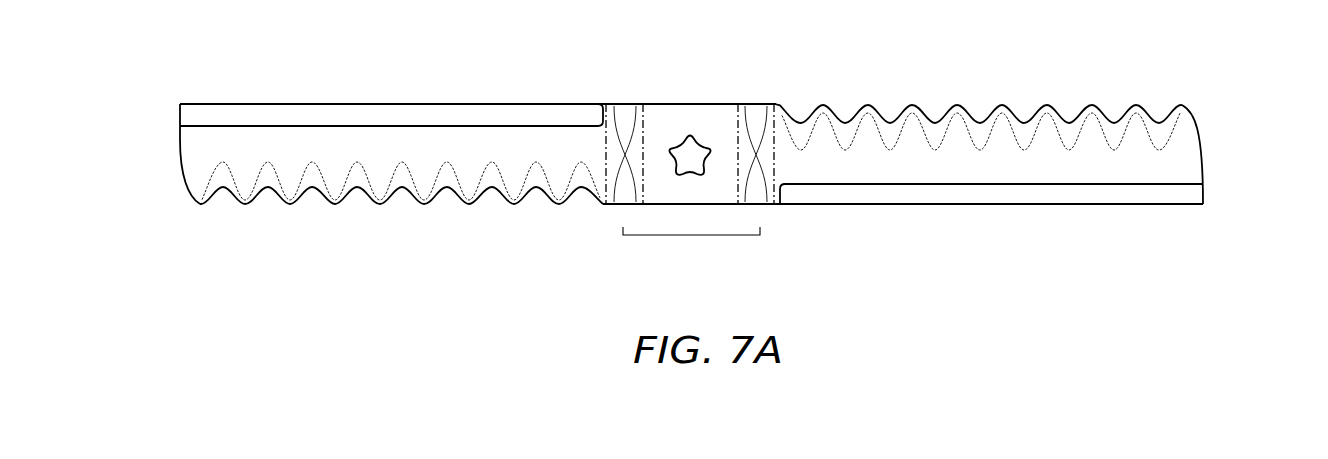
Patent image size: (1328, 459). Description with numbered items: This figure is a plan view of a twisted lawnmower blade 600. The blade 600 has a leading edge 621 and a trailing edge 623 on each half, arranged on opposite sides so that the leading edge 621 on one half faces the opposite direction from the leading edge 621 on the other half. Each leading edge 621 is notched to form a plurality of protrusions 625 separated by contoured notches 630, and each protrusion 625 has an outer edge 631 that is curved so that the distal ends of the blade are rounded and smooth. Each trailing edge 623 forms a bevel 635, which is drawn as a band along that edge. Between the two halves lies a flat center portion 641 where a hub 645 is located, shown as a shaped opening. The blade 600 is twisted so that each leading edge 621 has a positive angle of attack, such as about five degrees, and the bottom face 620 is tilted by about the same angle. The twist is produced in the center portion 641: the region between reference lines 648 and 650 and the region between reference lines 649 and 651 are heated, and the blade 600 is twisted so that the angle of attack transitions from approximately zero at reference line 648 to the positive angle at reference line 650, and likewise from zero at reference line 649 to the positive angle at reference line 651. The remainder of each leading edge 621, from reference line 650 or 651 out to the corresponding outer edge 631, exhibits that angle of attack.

The lawnmower blade 600 is at (695, 154).
The bottom face 620 is at (1198, 130).
The leading edge 621 is at (421, 226).
The trailing edge 623 is at (318, 95).
The protrusion 625 is at (290, 205).
The contoured notch 630 is at (357, 193).
The outer edge 631 is at (176, 153).
The bevel 635 is at (484, 107).
The center portion 641 is at (691, 235).
The hub 645 is at (690, 140).
The reference line 648 is at (643, 108).
The reference line 649 is at (740, 108).
The reference line 650 is at (606, 206).
The reference line 651 is at (777, 206).